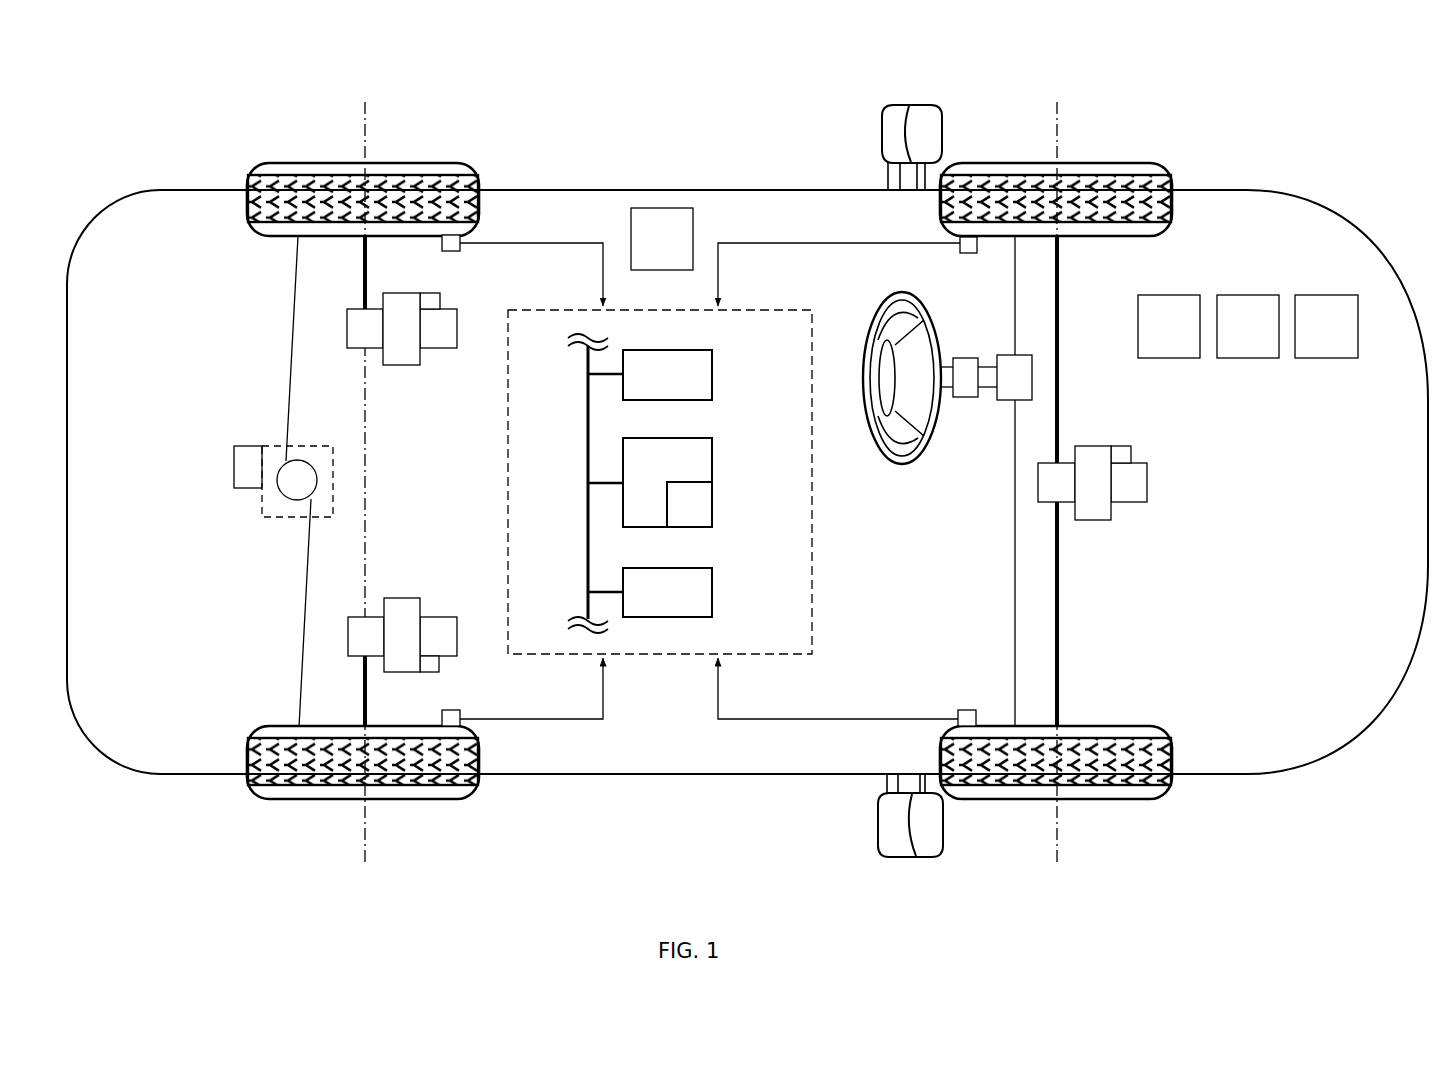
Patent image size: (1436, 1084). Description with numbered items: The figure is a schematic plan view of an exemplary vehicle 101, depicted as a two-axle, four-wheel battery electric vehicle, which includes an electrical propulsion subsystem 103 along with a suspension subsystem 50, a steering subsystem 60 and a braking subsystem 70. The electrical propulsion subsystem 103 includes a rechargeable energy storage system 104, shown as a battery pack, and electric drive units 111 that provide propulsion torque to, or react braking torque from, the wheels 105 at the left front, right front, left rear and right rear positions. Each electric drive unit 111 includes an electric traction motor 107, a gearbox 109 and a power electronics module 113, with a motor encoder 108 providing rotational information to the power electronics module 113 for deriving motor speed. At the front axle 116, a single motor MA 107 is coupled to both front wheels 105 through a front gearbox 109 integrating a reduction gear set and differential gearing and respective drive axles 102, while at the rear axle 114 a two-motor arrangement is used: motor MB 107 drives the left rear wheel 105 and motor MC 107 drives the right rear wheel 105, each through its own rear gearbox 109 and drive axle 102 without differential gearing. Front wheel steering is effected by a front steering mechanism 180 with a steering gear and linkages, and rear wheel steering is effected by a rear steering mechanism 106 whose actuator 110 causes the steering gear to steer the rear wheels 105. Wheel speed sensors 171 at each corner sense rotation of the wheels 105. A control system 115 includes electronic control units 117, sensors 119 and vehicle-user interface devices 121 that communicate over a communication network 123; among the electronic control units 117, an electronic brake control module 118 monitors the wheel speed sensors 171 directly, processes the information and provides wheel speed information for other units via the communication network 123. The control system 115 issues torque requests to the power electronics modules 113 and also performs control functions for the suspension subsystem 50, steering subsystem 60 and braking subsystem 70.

The vehicle 101 is at (667, 116).
The drive axle 102 is at (363, 290).
The electrical propulsion subsystem 103 is at (833, 674).
The rechargeable energy storage system 104 is at (662, 239).
The wheel 105 is at (304, 163).
The rear steering mechanism 106 is at (253, 481).
The electric traction motor 107 is at (400, 366).
The motor encoder 108 is at (430, 292).
The gearbox 109 is at (347, 335).
The actuator 110 is at (297, 480).
The electric drive unit 111 is at (772, 479).
The power electronics module 113 is at (457, 338).
The rear axle 114 is at (365, 133).
The control system 115 is at (705, 482).
The front axle 116 is at (1057, 135).
The electronic control unit 117 is at (689, 470).
The electronic brake control module 118 is at (689, 504).
The sensors 119 is at (712, 378).
The vehicle-user interface devices 121 is at (712, 588).
The communication network 123 is at (587, 440).
The wheel speed sensor 171 is at (452, 252).
The front steering mechanism 180 is at (947, 481).
The suspension subsystem 50 is at (1169, 326).
The steering subsystem 60 is at (1248, 326).
The braking subsystem 70 is at (1326, 326).